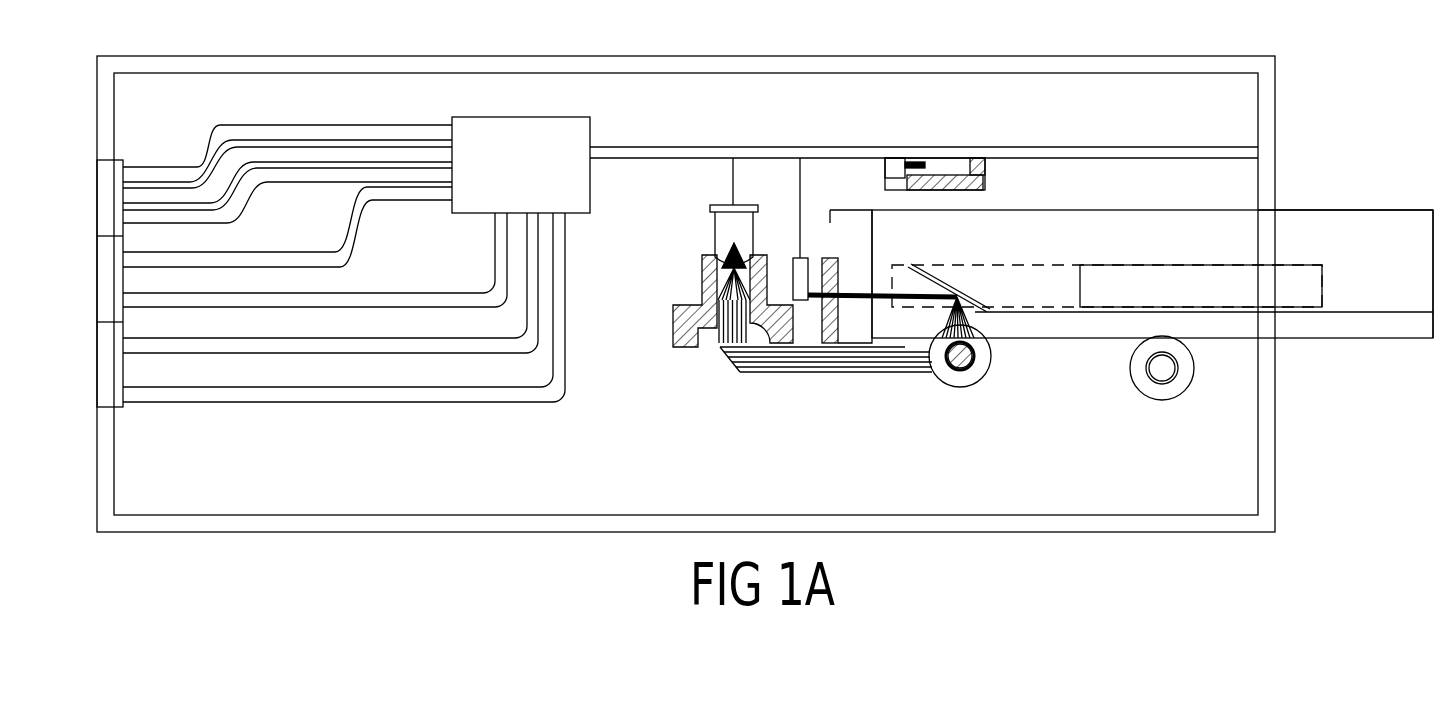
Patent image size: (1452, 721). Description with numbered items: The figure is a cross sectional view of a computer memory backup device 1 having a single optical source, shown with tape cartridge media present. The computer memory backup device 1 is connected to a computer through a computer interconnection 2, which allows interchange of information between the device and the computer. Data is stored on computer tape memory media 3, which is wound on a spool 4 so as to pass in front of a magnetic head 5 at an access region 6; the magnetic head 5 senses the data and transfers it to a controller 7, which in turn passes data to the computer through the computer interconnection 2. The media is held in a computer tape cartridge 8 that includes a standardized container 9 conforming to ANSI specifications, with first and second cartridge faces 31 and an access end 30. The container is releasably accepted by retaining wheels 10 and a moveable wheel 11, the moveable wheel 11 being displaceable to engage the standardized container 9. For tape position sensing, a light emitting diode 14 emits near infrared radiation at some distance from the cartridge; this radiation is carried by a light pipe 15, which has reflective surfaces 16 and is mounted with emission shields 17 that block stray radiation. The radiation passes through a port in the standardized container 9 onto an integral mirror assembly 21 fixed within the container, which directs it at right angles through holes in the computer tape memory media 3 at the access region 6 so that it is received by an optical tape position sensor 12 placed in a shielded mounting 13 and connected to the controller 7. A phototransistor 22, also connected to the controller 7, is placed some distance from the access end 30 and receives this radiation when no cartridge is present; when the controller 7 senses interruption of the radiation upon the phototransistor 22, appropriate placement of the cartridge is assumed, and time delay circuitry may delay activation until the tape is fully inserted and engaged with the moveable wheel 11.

The computer memory backup device 1 is at (860, 56).
The computer interconnection 2 is at (104, 388).
The computer tape memory media 3 is at (1028, 280).
The spool 4 is at (1313, 290).
The magnetic head 5 is at (847, 215).
The access region 6 is at (893, 305).
The controller 7 is at (592, 135).
The computer tape cartridge 8 is at (1330, 211).
The standardized container 9 is at (1155, 211).
The retaining wheels 10 is at (1150, 397).
The moveable wheel 11 is at (937, 385).
The optical tape position sensor 12 is at (790, 268).
The shielded mounting 13 is at (803, 250).
The light emitting diode 14 is at (716, 236).
The light pipe 15 is at (772, 378).
The reflective surfaces 16 is at (723, 360).
The emission shields 17 is at (702, 258).
The integral mirror assembly 21 is at (962, 290).
The phototransistor 22 is at (940, 158).
The access end 30 is at (872, 238).
The first and second cartridge faces 31 is at (1410, 210).